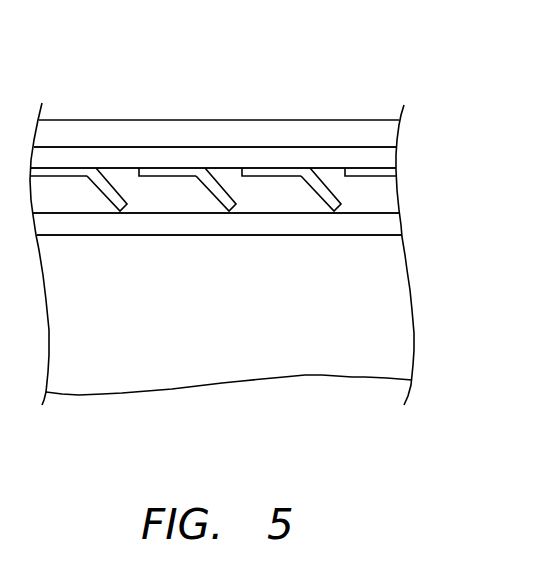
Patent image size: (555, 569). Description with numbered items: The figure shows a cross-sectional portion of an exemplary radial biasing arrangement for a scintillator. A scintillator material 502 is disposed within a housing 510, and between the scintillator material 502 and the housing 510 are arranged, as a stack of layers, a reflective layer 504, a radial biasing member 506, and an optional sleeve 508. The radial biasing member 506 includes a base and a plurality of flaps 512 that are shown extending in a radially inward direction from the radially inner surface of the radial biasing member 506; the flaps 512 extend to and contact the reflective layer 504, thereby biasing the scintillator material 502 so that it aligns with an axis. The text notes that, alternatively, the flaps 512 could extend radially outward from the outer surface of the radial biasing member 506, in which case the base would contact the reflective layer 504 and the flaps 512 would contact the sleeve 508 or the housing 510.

The scintillator material 502 is at (393, 280).
The reflective layer 504 is at (390, 220).
The radial biasing member 506 is at (391, 170).
The sleeve 508 is at (383, 157).
The housing 510 is at (362, 130).
The flaps 512 is at (322, 183).